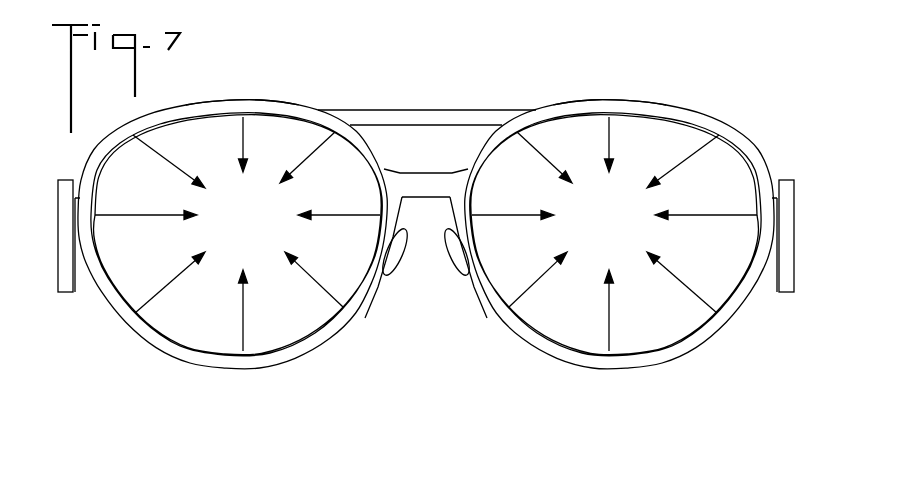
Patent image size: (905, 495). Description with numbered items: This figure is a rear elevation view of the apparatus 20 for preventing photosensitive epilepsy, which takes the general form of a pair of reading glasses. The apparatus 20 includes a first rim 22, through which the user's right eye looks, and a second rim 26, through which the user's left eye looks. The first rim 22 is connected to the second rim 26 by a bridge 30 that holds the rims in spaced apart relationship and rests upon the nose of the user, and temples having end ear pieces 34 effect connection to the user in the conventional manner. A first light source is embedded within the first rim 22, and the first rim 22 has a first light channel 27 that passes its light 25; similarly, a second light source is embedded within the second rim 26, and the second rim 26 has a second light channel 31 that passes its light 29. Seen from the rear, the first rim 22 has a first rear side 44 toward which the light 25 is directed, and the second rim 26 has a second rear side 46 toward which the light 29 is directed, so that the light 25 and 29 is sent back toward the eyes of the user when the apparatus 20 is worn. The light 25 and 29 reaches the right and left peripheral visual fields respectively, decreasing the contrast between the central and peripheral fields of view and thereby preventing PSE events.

The apparatus 20 is at (450, 68).
The first rim 22 is at (695, 355).
The light 25 is at (614, 234).
The second rim 26 is at (145, 350).
The first light channel 27 is at (545, 122).
The light 29 is at (237, 234).
The bridge 30 is at (427, 187).
The second light channel 31 is at (273, 115).
The ear pieces 34 is at (57, 268).
The first rear side 44 is at (600, 108).
The second rear side 46 is at (239, 104).